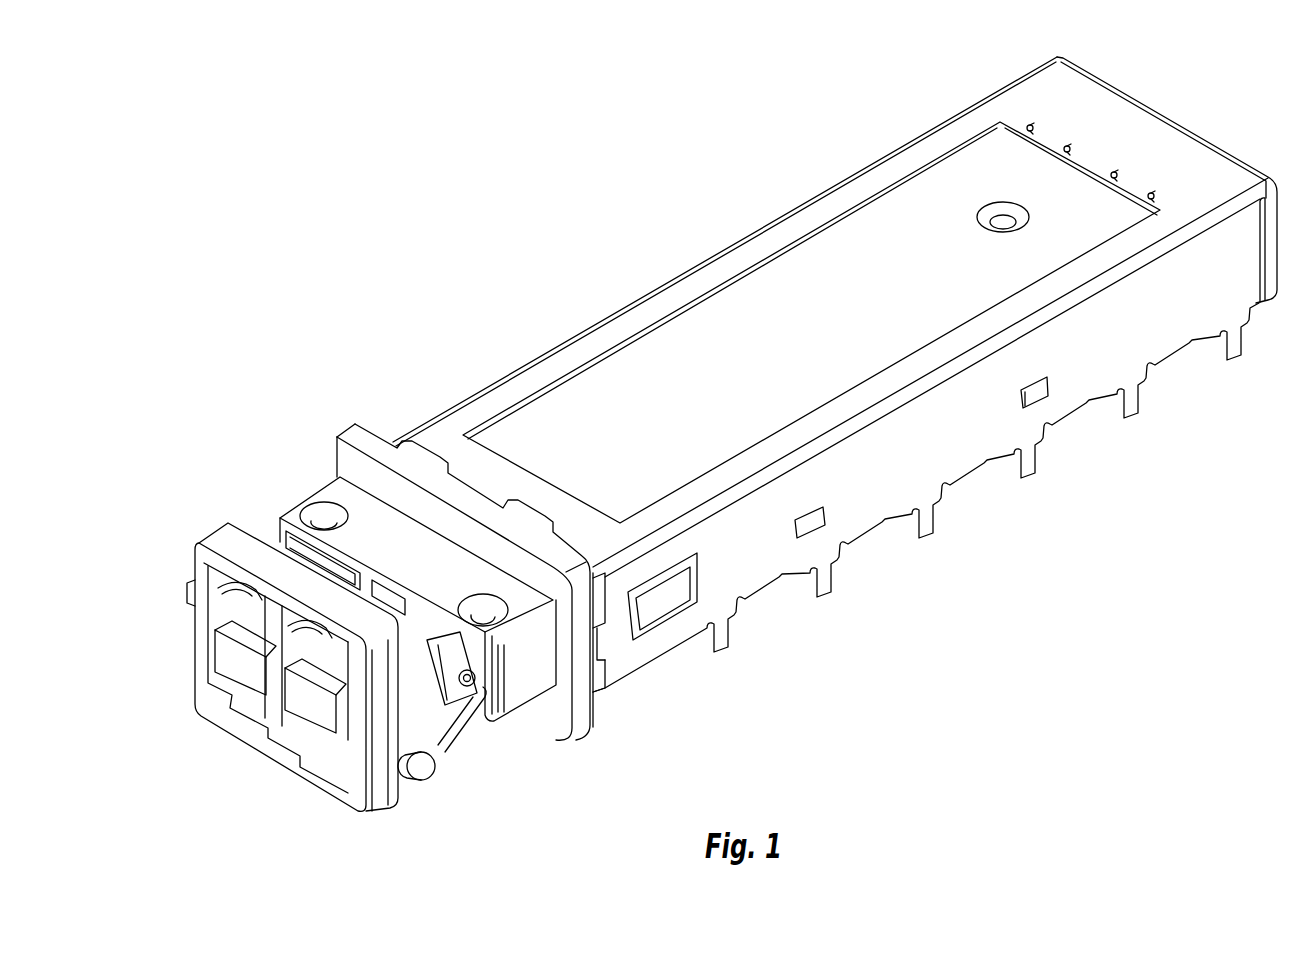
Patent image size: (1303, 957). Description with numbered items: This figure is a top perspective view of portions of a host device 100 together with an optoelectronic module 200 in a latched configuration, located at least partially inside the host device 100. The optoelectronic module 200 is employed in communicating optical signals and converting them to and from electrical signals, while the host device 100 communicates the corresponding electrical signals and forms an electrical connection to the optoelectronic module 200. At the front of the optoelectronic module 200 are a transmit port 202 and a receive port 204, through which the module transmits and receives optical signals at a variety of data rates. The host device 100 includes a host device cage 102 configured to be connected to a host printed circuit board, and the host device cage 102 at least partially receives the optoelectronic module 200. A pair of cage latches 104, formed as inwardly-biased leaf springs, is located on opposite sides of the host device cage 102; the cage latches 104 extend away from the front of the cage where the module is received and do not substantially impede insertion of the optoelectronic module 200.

The host device 100 is at (410, 390).
The host device cage 102 is at (614, 327).
The cage latches 104 is at (655, 597).
The optoelectronic module 200 is at (230, 742).
The transmit port 202 is at (247, 640).
The receive port 204 is at (333, 717).